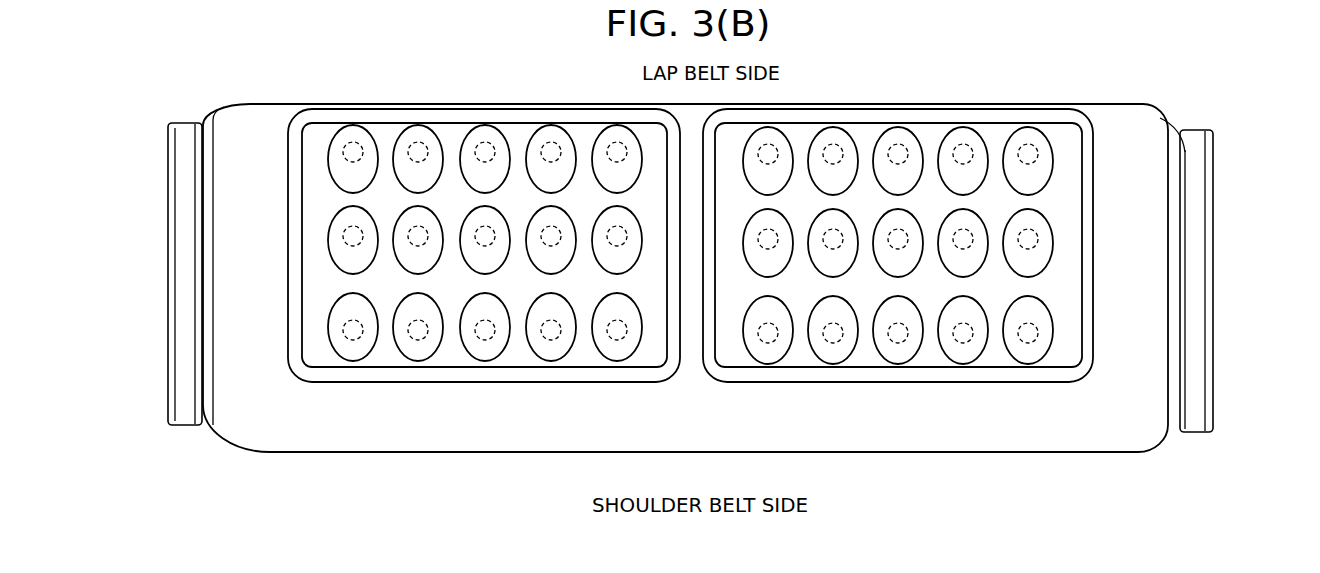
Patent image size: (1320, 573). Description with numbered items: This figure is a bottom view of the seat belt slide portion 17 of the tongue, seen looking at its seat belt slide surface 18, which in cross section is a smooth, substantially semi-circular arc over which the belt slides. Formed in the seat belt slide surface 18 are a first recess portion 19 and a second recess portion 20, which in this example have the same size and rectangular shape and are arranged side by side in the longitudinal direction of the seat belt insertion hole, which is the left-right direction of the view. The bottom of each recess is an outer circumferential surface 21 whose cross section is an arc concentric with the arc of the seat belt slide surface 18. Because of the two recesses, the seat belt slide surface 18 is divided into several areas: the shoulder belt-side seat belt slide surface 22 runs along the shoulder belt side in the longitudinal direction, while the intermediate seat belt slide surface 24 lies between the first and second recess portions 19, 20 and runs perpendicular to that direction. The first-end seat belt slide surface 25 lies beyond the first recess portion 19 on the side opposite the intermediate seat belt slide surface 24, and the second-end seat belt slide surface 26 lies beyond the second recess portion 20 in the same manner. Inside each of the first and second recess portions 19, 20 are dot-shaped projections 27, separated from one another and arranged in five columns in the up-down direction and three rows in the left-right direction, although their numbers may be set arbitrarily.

The seat belt slide portion 17 is at (268, 452).
The seat belt slide surface 18 is at (230, 364).
The first recess portion 19 is at (1083, 318).
The second recess portion 20 is at (667, 313).
The outer circumferential surface 21 is at (652, 153).
The shoulder belt-side seat belt slide surface 22 is at (890, 446).
The intermediate seat belt slide surface 24 is at (697, 255).
The first-end seat belt slide surface 25 is at (1153, 252).
The second-end seat belt slide surface 26 is at (242, 254).
The projections 27 is at (355, 232).